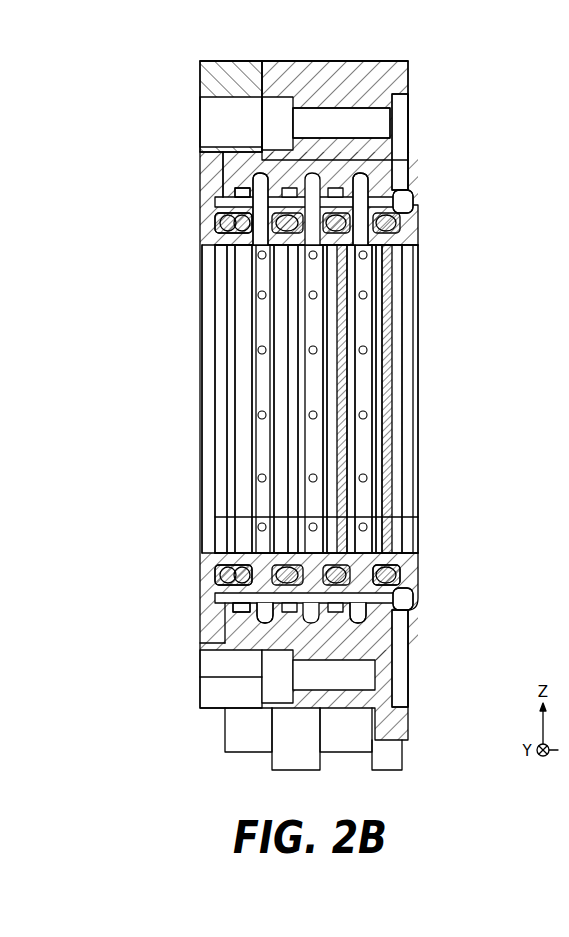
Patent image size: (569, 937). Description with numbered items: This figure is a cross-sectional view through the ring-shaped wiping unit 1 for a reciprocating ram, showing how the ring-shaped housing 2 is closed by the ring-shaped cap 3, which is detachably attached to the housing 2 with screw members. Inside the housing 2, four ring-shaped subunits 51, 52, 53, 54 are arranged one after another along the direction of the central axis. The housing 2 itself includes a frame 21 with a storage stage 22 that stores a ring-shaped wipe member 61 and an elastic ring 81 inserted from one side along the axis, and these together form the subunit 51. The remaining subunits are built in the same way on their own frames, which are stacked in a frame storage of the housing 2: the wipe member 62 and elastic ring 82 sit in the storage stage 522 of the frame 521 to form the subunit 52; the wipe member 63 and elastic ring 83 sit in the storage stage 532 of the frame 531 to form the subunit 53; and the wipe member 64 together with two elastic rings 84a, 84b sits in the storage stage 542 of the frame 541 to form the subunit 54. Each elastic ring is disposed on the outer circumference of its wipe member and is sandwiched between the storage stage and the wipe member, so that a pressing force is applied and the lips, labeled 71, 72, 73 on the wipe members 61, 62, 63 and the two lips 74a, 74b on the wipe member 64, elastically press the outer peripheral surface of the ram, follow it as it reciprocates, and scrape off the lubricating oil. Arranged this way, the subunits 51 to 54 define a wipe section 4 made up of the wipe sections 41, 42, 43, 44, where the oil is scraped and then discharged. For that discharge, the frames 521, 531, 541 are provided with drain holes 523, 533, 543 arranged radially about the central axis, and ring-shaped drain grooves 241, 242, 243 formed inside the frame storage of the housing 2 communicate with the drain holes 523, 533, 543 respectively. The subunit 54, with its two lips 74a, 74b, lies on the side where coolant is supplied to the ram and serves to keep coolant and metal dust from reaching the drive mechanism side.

The wiping unit 1 is at (390, 55).
The housing 2 is at (350, 61).
The cap 3 is at (222, 61).
The wipe section 4 is at (318, 751).
The wipe section 41 is at (392, 767).
The wipe section 42 is at (346, 742).
The wipe section 43 is at (296, 751).
The wipe section 44 is at (248, 742).
The subunit 51 is at (346, 520).
The subunit 52 is at (376, 498).
The subunit 53 is at (296, 495).
The subunit 54 is at (246, 515).
The first electrode plate 71 is at (392, 256).
The second electrode plate 72 is at (386, 300).
The third electrode plate 73 is at (288, 330).
The fourth electrode plate first part 74a is at (232, 255).
The fourth electrode plate second part 74b is at (238, 285).
The frame 21 is at (406, 628).
The storage stage 22 is at (405, 578).
The wipe member 61 is at (364, 262).
The wipe member 62 is at (362, 332).
The wipe member 63 is at (256, 292).
The wipe member 64 is at (225, 243).
The elastic ring 81 is at (410, 200).
The elastic ring 82 is at (372, 182).
The elastic ring 83 is at (240, 192).
The elastic ring 84a is at (218, 223).
The elastic ring 84b is at (226, 204).
The drain groove 241 is at (404, 150).
The drain groove 242 is at (400, 102).
The drain groove 243 is at (232, 170).
The frame 521 is at (352, 640).
The storage stage 522 is at (368, 560).
The drain hole 523 is at (342, 380).
The frame 531 is at (262, 618).
The storage stage 532 is at (238, 556).
The drain hole 533 is at (330, 405).
The frame 541 is at (238, 611).
The storage stage 542 is at (220, 575).
The drain hole 543 is at (276, 405).